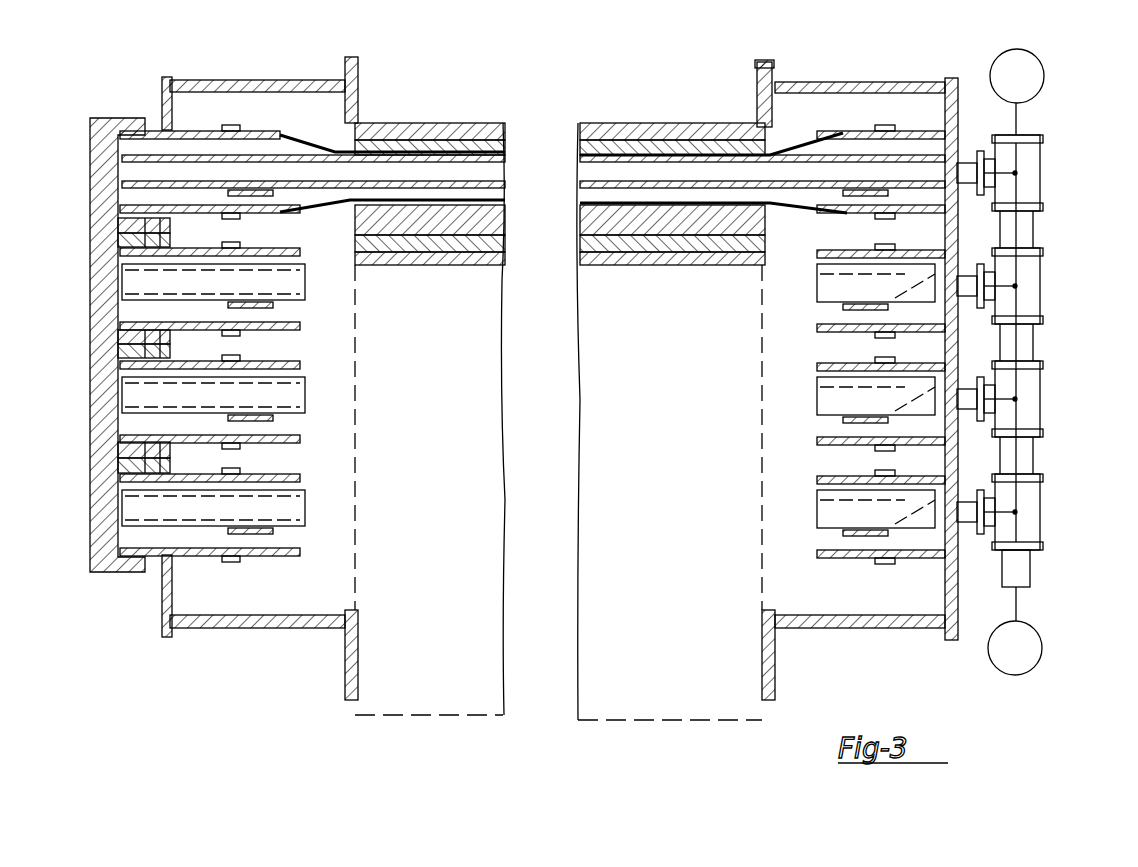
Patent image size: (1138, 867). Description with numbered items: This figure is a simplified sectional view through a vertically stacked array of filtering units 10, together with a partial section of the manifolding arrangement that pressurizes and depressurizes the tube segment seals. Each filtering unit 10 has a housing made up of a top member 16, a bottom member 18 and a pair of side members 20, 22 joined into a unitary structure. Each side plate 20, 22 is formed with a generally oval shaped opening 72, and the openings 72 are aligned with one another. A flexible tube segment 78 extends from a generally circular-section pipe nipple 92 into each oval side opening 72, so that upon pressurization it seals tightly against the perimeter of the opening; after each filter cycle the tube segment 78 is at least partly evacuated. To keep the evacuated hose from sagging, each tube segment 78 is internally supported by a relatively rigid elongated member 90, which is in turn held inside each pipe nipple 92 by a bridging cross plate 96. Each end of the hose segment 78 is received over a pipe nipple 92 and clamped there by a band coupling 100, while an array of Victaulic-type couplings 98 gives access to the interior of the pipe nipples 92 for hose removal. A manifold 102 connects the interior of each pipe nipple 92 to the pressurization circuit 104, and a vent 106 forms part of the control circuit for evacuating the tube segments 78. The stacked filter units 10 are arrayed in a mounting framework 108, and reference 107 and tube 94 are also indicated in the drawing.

The filtering unit 10 is at (875, 130).
The top member 16 is at (425, 120).
The bottom member 18 is at (430, 240).
The side member 20 is at (392, 228).
The side member 22 is at (740, 232).
The oval shaped opening 72 is at (372, 165).
The flexible tube segment 78 is at (333, 130).
The elongated member 90 is at (295, 150).
The pipe nipple 92 is at (188, 128).
The tube 94 is at (198, 145).
The cross plate 96 is at (275, 190).
The coupling 98 is at (110, 115).
The band coupling 100 is at (262, 106).
The manifold 102 is at (1042, 190).
The pressurization circuit 104 is at (1042, 656).
The vent 106 is at (1044, 84).
The gap 107 is at (520, 86).
The mounting frame work 108 is at (887, 625).